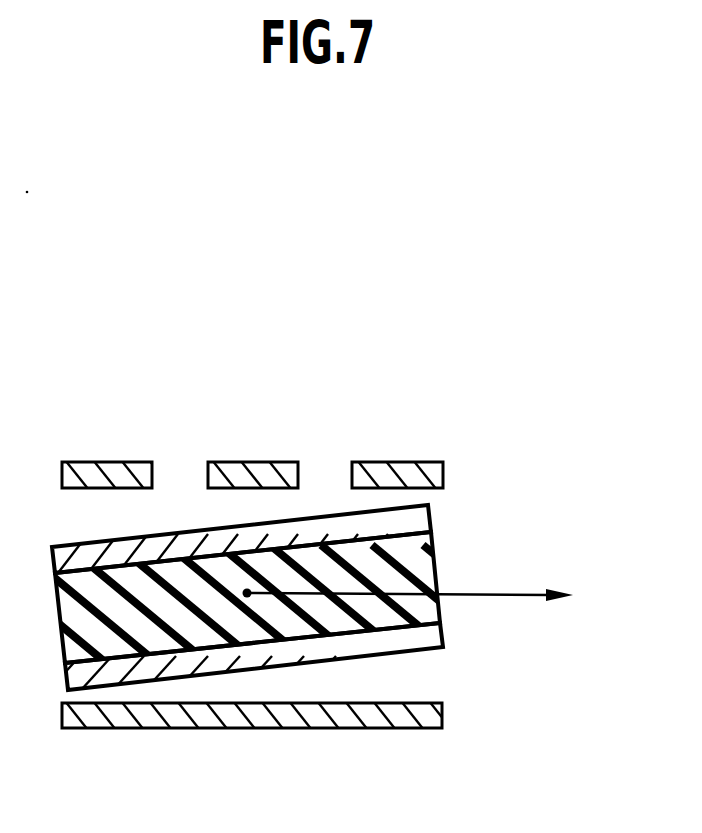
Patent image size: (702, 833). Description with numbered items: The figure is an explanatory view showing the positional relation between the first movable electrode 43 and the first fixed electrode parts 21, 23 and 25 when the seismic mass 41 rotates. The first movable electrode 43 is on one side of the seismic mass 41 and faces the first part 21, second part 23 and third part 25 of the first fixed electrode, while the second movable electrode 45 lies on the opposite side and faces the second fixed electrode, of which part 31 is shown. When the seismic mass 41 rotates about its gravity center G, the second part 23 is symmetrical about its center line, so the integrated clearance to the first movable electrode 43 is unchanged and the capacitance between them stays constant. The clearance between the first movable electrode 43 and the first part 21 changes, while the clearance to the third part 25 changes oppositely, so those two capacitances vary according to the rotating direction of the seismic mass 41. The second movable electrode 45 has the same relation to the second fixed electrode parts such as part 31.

The first part of the first fixed electrode 21 is at (105, 462).
The second part of the first fixed electrode 23 is at (252, 462).
The third part of the first fixed electrode 25 is at (395, 462).
The second fixed electrode part 31 is at (333, 717).
The seismic mass 41 is at (435, 560).
The first movable electrode 43 is at (432, 512).
The second movable electrode 45 is at (443, 645).
The gravity center G is at (247, 593).